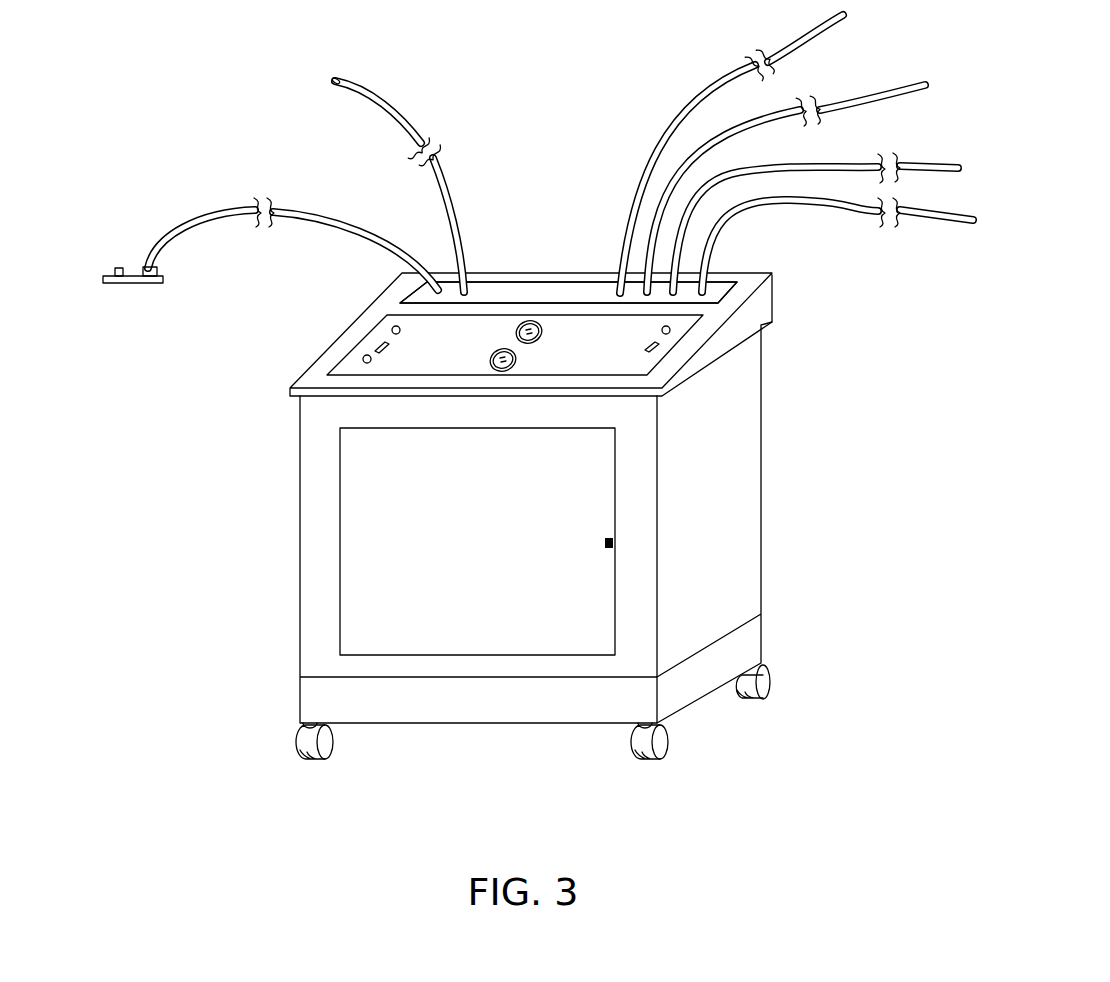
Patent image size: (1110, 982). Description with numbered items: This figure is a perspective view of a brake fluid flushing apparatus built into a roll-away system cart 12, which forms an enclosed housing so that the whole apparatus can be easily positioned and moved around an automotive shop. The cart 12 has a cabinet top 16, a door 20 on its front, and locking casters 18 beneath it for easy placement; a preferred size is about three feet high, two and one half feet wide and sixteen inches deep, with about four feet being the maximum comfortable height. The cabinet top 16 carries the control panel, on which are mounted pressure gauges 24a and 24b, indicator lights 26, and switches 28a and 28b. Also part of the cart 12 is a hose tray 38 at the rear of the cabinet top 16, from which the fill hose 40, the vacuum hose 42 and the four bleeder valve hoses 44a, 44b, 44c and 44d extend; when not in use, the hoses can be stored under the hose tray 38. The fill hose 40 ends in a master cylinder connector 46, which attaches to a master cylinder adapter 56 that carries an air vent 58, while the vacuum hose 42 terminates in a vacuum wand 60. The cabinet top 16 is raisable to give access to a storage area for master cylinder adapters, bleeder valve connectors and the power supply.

The roll-away system cart 12 is at (719, 504).
The cabinet top 16 is at (775, 300).
The locking casters 18 is at (770, 674).
The door 20 is at (373, 542).
The pressure gauge 24a is at (524, 322).
The pressure gauge 24b is at (515, 358).
The indicator lights 26 is at (392, 330).
The switch 28a is at (660, 341).
The switch 28b is at (375, 346).
The hose tray 38 is at (520, 291).
The fill hose 40 is at (330, 222).
The vacuum hose 42 is at (452, 187).
The bleeder valve hose 44a is at (696, 98).
The bleeder valve hose 44b is at (853, 104).
The bleeder valve hose 44c is at (921, 166).
The bleeder valve hose 44d is at (920, 214).
The master cylinder connector 46 is at (144, 266).
The master cylinder adapter 56 is at (125, 284).
The air vent 58 is at (116, 267).
The vacuum wand 60 is at (372, 86).